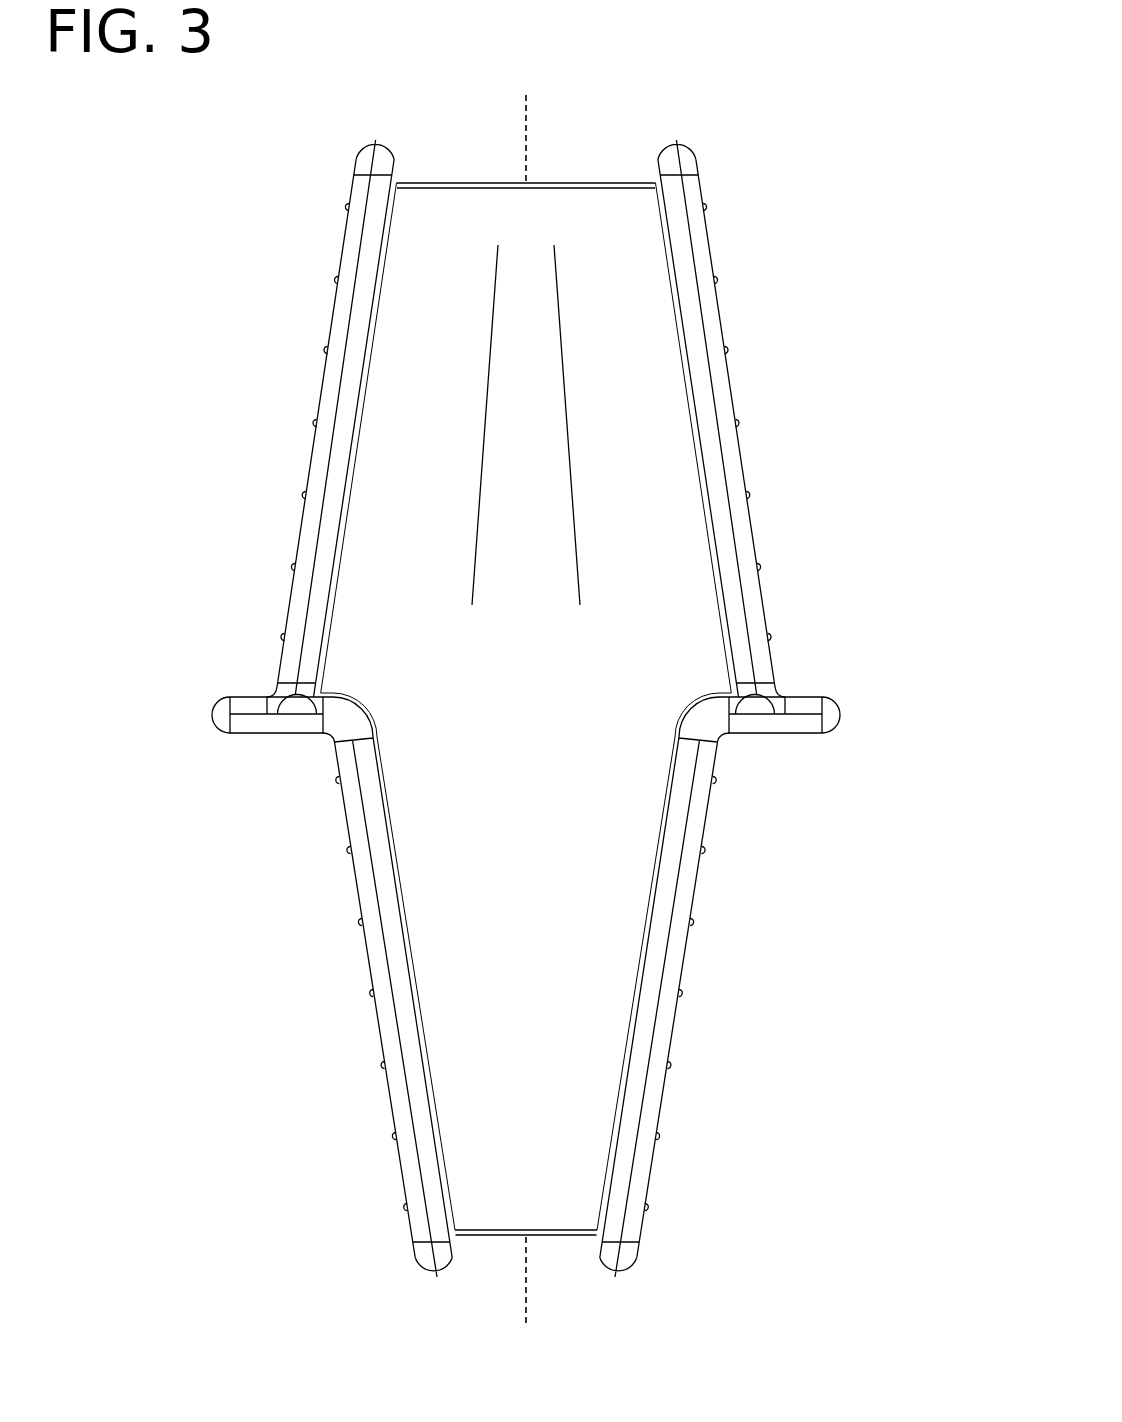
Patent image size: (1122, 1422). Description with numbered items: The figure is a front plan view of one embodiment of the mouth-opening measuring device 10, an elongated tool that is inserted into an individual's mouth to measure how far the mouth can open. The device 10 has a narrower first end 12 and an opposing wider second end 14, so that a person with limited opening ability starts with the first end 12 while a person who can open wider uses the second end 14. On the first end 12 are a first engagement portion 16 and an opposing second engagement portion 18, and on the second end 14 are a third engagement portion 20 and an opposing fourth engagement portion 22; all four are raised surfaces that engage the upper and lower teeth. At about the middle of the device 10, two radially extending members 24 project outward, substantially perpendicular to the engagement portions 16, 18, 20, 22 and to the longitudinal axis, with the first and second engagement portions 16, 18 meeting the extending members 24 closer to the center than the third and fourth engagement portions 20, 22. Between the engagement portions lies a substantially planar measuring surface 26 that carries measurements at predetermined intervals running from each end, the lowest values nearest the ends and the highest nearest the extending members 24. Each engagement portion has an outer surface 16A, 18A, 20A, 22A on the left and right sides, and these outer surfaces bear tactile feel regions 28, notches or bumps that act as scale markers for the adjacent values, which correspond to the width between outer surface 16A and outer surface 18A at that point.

The mouth-opening measuring device 10 is at (783, 88).
The first end 12 is at (487, 1237).
The second end 14 is at (587, 183).
The first engagement portion 16 is at (342, 987).
The outer surface of first engagement portion 16A is at (350, 873).
The second engagement portion 18 is at (730, 987).
The outer surface of second engagement portion 18A is at (697, 883).
The third engagement portion 20 is at (805, 427).
The outer surface of third engagement portion 20A is at (707, 257).
The fourth engagement portion 22 is at (282, 427).
The outer surface of fourth engagement portion 22A is at (327, 353).
The radially extending member 24 is at (247, 708).
The measuring surface 26 is at (528, 730).
The tactile feel regions 28 is at (735, 422).